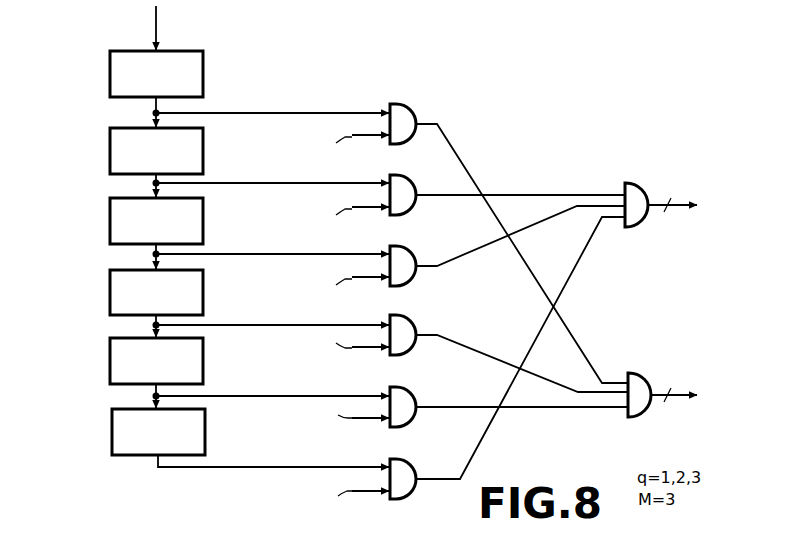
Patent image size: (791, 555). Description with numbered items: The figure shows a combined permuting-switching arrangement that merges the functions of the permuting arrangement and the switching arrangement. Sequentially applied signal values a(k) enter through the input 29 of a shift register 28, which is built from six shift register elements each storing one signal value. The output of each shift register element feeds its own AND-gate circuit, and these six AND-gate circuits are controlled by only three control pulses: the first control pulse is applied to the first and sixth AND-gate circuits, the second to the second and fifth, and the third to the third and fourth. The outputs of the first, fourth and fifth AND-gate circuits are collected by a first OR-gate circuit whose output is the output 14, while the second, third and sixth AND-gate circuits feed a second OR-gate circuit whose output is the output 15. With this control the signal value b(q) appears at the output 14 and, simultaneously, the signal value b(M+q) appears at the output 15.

The input 29 is at (158, 10).
The shift register 28 is at (77, 268).
The output 14 is at (668, 210).
The output 15 is at (668, 398).